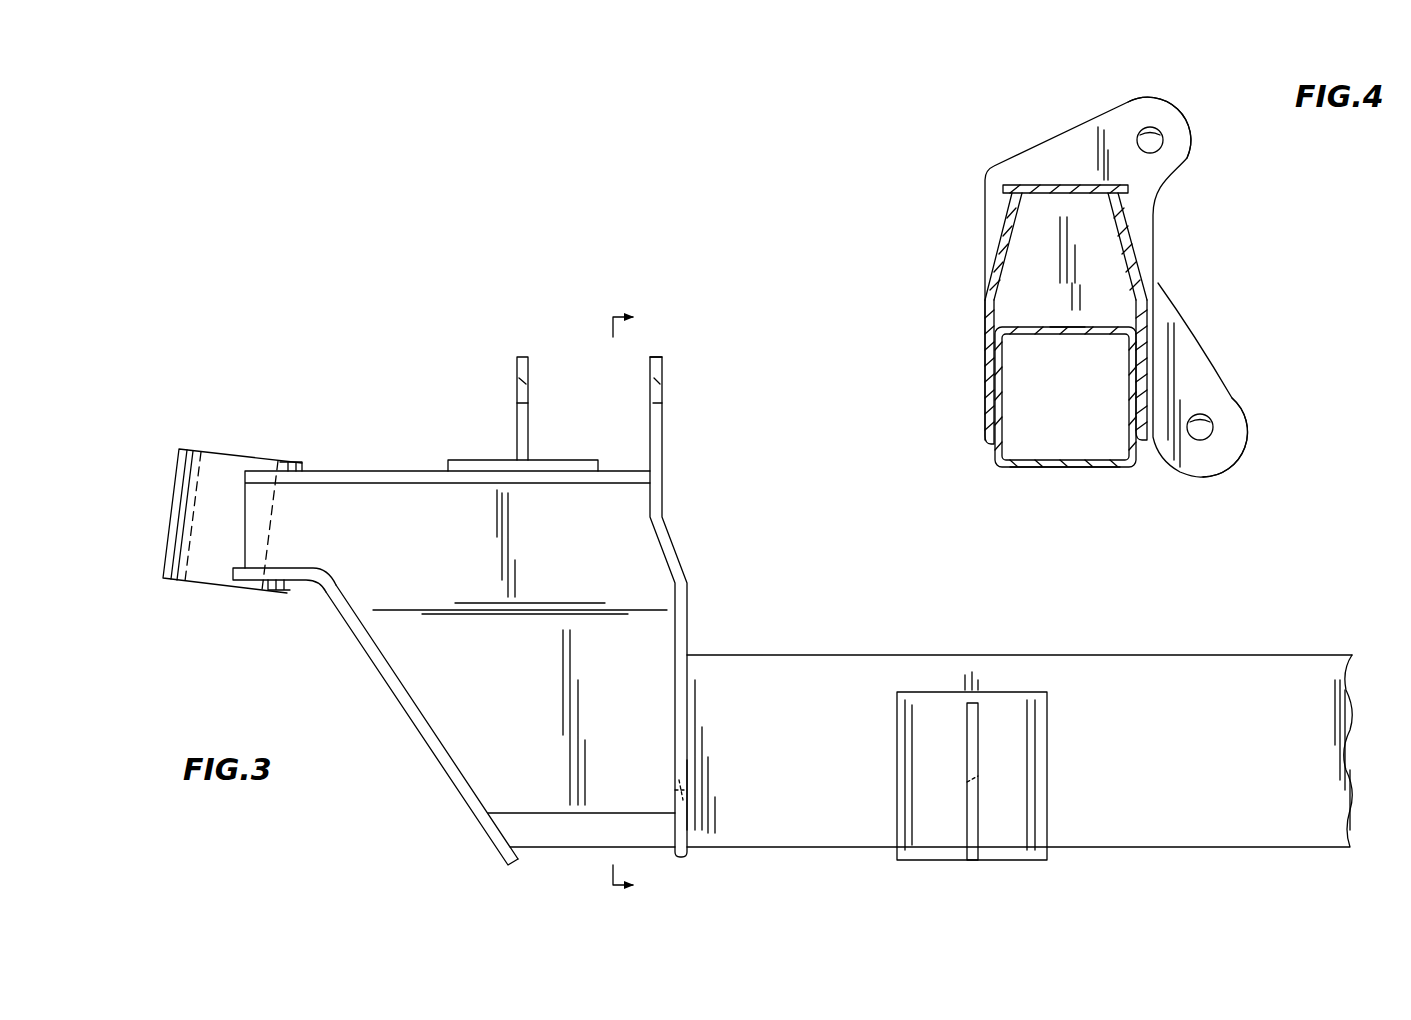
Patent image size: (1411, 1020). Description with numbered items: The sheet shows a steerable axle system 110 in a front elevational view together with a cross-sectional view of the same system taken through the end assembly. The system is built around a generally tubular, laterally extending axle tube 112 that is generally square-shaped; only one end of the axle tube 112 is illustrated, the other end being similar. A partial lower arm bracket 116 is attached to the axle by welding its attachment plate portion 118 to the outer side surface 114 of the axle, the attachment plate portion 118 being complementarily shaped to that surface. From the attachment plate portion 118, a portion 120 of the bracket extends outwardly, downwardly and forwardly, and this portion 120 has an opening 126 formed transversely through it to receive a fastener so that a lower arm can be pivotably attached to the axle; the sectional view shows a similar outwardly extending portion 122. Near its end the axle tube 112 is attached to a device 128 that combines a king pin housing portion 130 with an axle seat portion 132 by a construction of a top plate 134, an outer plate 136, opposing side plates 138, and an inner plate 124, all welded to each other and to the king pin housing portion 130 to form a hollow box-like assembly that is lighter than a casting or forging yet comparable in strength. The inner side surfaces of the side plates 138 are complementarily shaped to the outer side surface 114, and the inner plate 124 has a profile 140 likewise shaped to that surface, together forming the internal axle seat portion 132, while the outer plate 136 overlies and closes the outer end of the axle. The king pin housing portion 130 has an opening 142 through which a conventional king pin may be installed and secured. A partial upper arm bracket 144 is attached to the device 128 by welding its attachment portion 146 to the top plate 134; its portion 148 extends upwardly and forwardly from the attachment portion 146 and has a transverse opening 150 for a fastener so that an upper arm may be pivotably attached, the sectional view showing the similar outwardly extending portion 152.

In FIG. 3, the axle system 110 is at (465, 877).
In FIG. 4, the axle system 110 is at (928, 140).
In FIG. 3, the axle tube 112 is at (1228, 850).
In FIG. 4, the axle tube 112 is at (1000, 475).
In FIG. 3, the outer side surface 114 is at (1103, 653).
In FIG. 4, the outer side surface 114 is at (1087, 467).
In FIG. 3, the lower arm bracket 116 is at (1052, 822).
In FIG. 3, the attachment plate portion 118 is at (897, 743).
In FIG. 3, the portion 120 is at (972, 782).
In FIG. 3, the portion 122 is at (687, 797).
In FIG. 4, the portion 122 is at (1237, 455).
In FIG. 3, the inner plate 124 is at (683, 547).
In FIG. 4, the inner plate 124 is at (1160, 253).
In FIG. 3, the opening 126 is at (678, 790).
In FIG. 4, the opening 126 is at (1213, 418).
In FIG. 3, the device 128 is at (397, 695).
In FIG. 3, the king pin housing portion 130 is at (243, 455).
In FIG. 3, the axle seat portion 132 is at (687, 670).
In FIG. 4, the axle seat portion 132 is at (1000, 316).
In FIG. 3, the top plate 134 is at (355, 470).
In FIG. 4, the top plate 134 is at (1070, 183).
In FIG. 3, the outer plate 136 is at (427, 740).
In FIG. 3, the side plates 138 is at (370, 590).
In FIG. 4, the side plates 138 is at (997, 240).
In FIG. 4, the profile 140 is at (1062, 335).
In FIG. 3, the opening 142 is at (213, 473).
In FIG. 3, the upper arm bracket 144 is at (520, 350).
In FIG. 3, the attachment portion 146 is at (552, 460).
In FIG. 3, the portion 148 is at (530, 427).
In FIG. 3, the opening 150 is at (514, 385).
In FIG. 4, the opening 150 is at (1163, 142).
In FIG. 3, the portion 152 is at (660, 355).
In FIG. 4, the portion 152 is at (1157, 100).